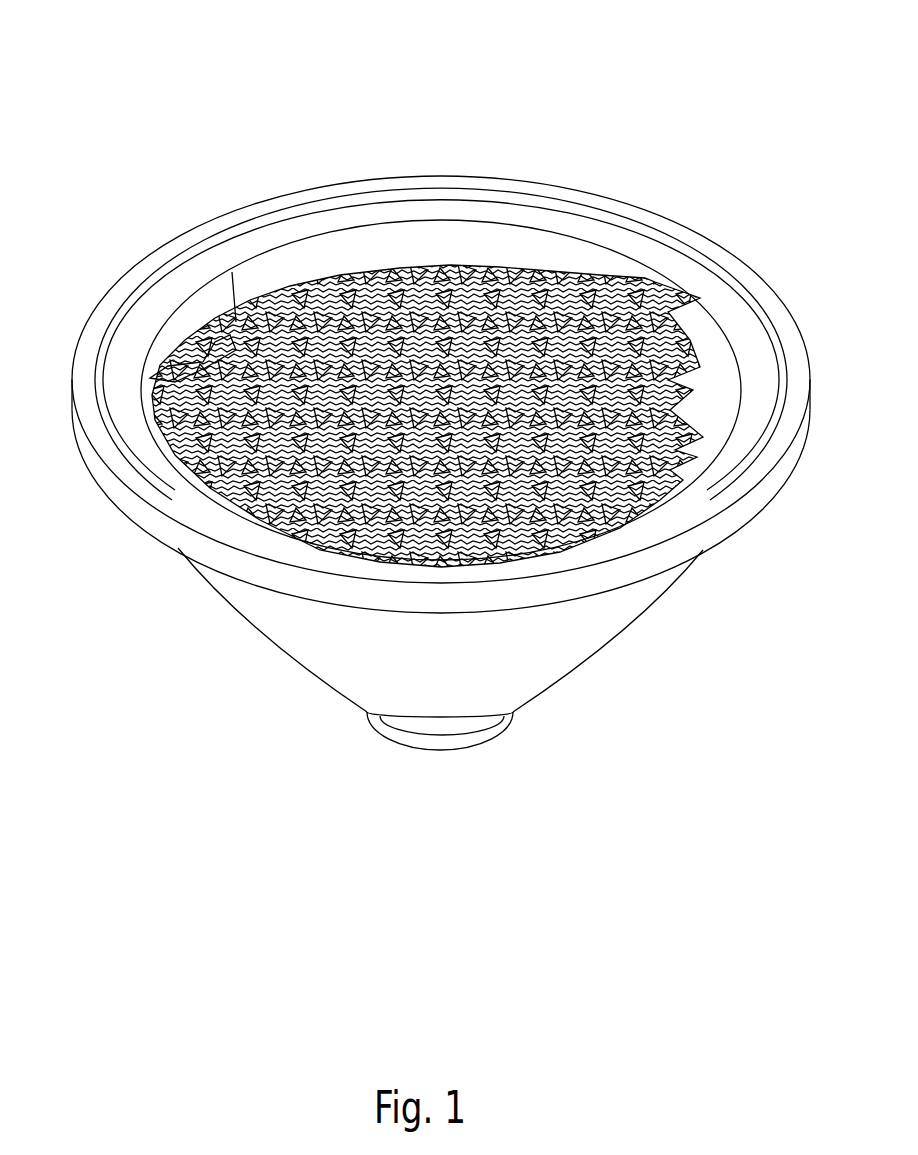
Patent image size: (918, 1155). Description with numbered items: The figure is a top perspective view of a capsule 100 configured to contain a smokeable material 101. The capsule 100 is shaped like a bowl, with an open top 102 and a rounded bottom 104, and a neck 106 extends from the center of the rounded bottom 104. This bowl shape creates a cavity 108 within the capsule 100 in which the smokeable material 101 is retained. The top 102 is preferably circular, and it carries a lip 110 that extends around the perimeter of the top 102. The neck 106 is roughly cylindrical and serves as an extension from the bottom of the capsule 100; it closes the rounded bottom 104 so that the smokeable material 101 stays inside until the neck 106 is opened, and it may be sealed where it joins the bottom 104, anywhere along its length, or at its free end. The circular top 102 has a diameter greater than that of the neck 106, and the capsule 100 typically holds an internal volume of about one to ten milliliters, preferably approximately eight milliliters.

The capsule 100 is at (490, 58).
The smokeable material 101 is at (217, 337).
The top 102 is at (600, 182).
The rounded bottom 104 is at (620, 640).
The neck 106 is at (463, 752).
The cavity 108 is at (340, 255).
The lip 110 is at (727, 262).